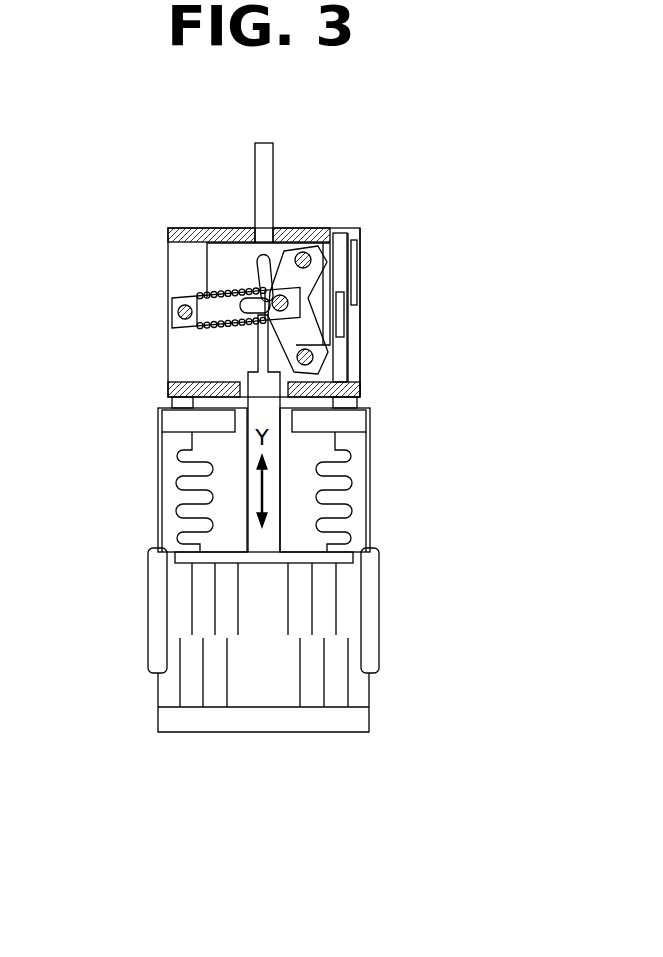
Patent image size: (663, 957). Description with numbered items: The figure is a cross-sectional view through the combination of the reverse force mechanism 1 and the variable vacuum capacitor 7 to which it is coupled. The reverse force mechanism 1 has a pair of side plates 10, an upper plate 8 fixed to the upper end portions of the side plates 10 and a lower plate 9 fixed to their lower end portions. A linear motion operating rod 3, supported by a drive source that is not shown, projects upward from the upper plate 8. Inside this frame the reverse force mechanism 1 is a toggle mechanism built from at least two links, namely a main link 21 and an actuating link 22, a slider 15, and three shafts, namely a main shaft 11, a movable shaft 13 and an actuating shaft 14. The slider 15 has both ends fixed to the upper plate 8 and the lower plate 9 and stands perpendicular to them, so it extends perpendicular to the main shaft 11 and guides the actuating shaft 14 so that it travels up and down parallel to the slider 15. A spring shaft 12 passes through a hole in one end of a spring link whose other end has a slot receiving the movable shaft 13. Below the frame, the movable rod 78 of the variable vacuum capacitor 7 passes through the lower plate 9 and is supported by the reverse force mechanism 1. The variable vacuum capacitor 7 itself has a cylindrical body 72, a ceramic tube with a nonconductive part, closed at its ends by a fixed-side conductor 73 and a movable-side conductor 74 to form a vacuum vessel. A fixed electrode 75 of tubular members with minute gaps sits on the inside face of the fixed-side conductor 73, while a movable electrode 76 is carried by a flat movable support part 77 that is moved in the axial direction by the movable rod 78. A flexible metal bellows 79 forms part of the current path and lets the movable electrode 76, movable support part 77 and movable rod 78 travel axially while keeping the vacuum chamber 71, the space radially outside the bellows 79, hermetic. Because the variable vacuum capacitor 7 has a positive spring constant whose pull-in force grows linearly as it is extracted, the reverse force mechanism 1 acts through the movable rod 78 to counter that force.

The reverse force mechanism 1 is at (190, 262).
The linear motion operating rod 3 is at (273, 207).
The variable vacuum capacitor 7 is at (300, 477).
The upper plate 8 is at (183, 228).
The lower plate 9 is at (168, 388).
The side plates 10 is at (312, 360).
The main shaft 11 is at (358, 380).
The spring shaft 12 is at (170, 308).
The movable shaft 13 is at (292, 303).
The actuating shaft 14 is at (312, 258).
The slider 15 is at (360, 332).
The main link 21 is at (325, 342).
The actuating link 22 is at (298, 288).
The vacuum chamber 71 is at (265, 637).
The cylindrical body 72 is at (337, 608).
The fixed-side conductor 73 is at (328, 720).
The movable-side conductor 74 is at (345, 425).
The fixed electrode 75 is at (348, 693).
The movable electrode 76 is at (379, 590).
The movable support part 77 is at (188, 560).
The movable rod 78 is at (248, 402).
The bellows 79 is at (178, 498).